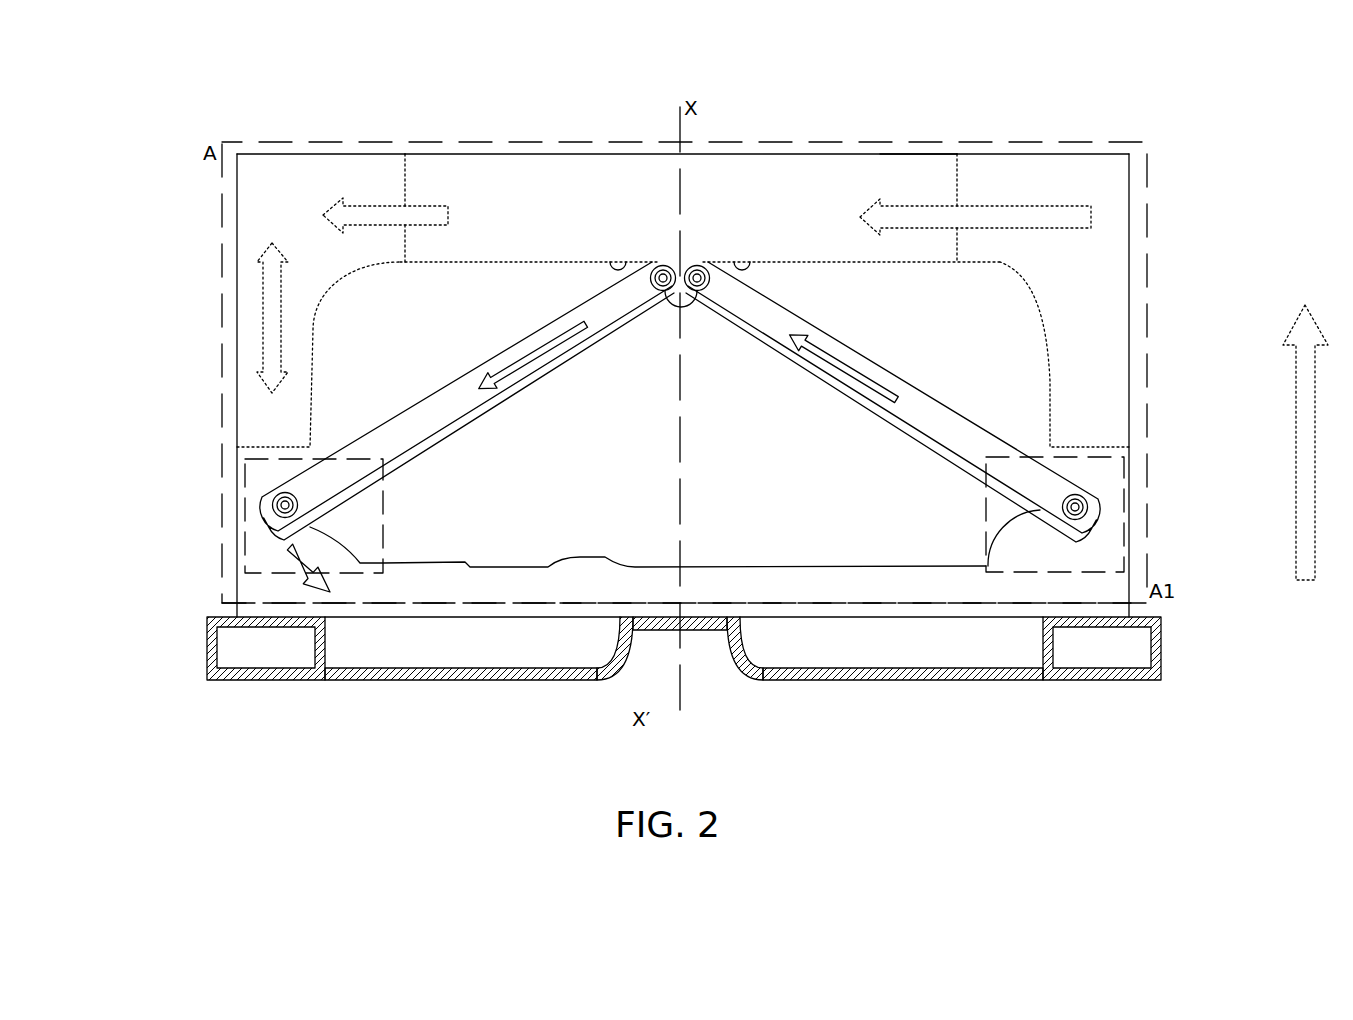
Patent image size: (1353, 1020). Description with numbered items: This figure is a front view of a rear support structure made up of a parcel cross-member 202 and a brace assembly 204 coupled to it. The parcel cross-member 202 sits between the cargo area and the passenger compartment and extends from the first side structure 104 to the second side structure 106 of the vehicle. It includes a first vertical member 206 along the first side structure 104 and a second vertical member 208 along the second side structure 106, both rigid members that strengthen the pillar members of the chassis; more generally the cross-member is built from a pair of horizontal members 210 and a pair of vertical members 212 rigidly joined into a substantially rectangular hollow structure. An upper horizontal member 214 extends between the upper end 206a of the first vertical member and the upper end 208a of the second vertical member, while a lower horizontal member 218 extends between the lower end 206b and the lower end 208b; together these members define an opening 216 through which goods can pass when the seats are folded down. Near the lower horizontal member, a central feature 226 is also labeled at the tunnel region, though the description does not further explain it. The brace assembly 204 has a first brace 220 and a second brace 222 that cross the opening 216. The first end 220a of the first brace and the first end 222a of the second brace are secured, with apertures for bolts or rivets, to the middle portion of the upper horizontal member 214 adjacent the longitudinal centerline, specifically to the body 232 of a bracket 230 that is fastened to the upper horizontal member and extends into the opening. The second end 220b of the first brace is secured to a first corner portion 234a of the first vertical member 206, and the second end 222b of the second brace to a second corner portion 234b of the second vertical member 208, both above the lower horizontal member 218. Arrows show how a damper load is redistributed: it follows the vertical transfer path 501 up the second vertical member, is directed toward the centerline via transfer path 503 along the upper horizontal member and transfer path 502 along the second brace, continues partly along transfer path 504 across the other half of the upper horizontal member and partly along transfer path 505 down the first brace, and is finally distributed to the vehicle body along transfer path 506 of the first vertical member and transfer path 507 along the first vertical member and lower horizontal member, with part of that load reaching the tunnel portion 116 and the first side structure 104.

The first side structure 104 is at (207, 655).
The second side structure 106 is at (1161, 650).
The tunnel portion 116 is at (698, 690).
The parcel cross-member 202 is at (1130, 120).
The brace assembly 204 is at (540, 280).
The first vertical member 206 is at (295, 217).
The upper end of the first vertical member 206a is at (255, 165).
The lower end of the first vertical member 206b is at (260, 585).
The second vertical member 208 is at (1090, 330).
The upper end of the second vertical member 208a is at (1105, 167).
The lower end of the second vertical member 208b is at (1092, 587).
The pair of horizontal members 210 is at (913, 177).
The pair of vertical members 212 is at (237, 283).
The upper horizontal member 214 is at (705, 178).
The opening 216 is at (925, 500).
The lower horizontal member 218 is at (505, 600).
The first brace 220 is at (432, 410).
The first end of the first brace 220a is at (655, 262).
The second end of the first brace 220b is at (272, 495).
The second brace 222 is at (782, 323).
The first end of the second brace 222a is at (714, 264).
The second end of the second brace 222b is at (1120, 494).
The central slot 226 is at (614, 680).
The bracket 230 is at (620, 265).
The body 232 is at (652, 266).
The first corner portion 234a is at (246, 495).
The second corner portion 234b is at (1123, 497).
The vertical transfer path 501 is at (1254, 442).
The transfer path 502 is at (830, 356).
The transfer path 503 is at (980, 210).
The transfer path 504 is at (420, 203).
The transfer path 505 is at (527, 354).
The transfer path 506 is at (262, 333).
The transfer path 507 is at (288, 547).